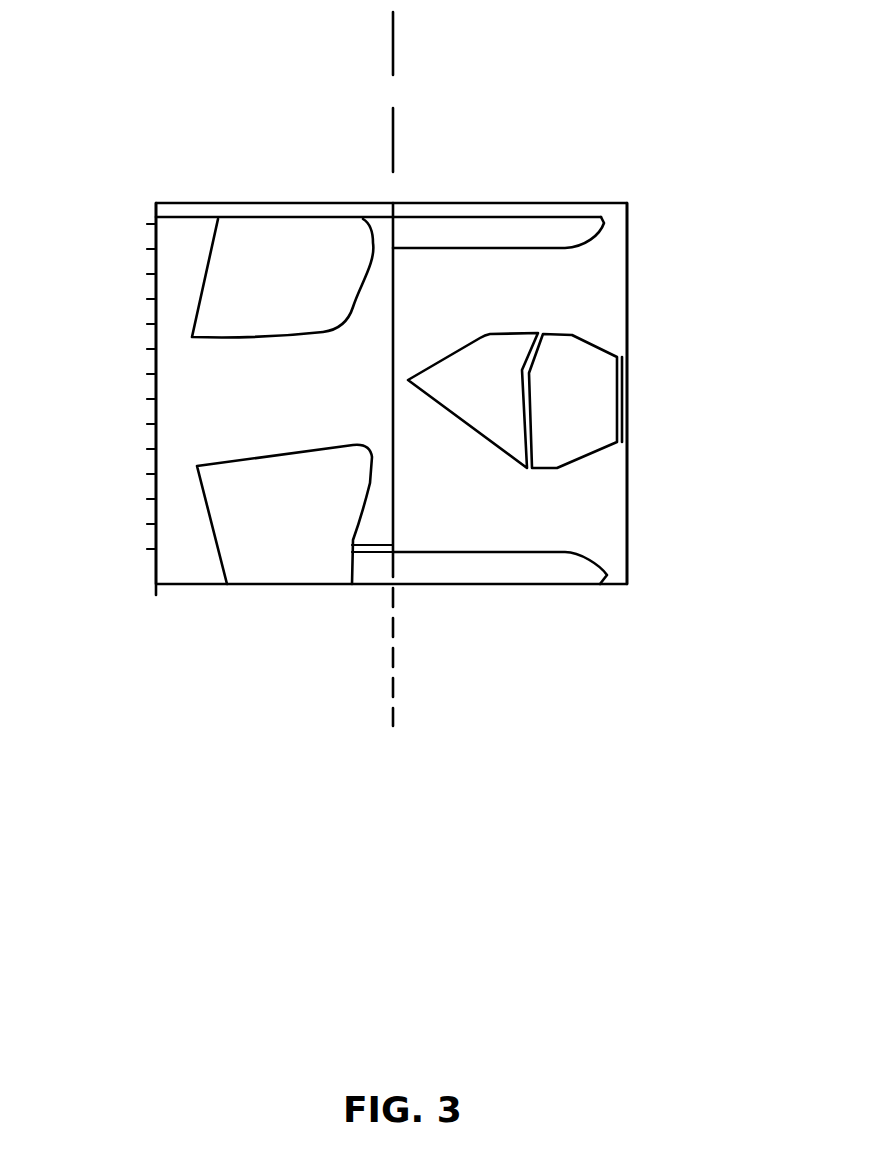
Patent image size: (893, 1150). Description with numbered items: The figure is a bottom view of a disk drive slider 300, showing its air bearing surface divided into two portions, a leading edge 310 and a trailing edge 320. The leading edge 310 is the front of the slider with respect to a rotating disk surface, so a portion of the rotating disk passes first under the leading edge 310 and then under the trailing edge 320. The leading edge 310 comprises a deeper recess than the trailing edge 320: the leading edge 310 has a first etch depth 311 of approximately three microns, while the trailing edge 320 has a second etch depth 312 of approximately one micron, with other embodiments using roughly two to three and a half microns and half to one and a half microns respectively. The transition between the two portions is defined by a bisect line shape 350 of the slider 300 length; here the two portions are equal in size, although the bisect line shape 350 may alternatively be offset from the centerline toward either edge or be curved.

The disk drive slider 300 is at (187, 44).
The leading edge 310 is at (155, 483).
The first etch depth 311 is at (187, 398).
The second etch depth 312 is at (593, 310).
The trailing edge 320 is at (628, 507).
The bisect line shape 350 is at (393, 133).